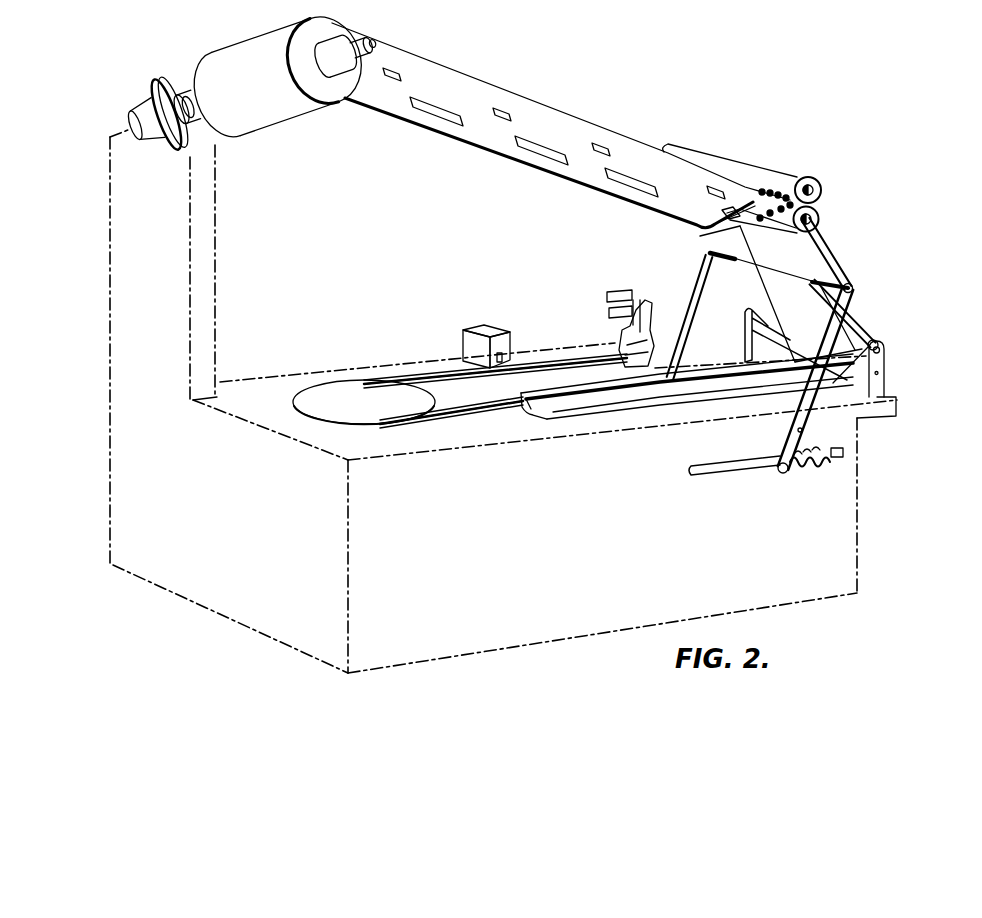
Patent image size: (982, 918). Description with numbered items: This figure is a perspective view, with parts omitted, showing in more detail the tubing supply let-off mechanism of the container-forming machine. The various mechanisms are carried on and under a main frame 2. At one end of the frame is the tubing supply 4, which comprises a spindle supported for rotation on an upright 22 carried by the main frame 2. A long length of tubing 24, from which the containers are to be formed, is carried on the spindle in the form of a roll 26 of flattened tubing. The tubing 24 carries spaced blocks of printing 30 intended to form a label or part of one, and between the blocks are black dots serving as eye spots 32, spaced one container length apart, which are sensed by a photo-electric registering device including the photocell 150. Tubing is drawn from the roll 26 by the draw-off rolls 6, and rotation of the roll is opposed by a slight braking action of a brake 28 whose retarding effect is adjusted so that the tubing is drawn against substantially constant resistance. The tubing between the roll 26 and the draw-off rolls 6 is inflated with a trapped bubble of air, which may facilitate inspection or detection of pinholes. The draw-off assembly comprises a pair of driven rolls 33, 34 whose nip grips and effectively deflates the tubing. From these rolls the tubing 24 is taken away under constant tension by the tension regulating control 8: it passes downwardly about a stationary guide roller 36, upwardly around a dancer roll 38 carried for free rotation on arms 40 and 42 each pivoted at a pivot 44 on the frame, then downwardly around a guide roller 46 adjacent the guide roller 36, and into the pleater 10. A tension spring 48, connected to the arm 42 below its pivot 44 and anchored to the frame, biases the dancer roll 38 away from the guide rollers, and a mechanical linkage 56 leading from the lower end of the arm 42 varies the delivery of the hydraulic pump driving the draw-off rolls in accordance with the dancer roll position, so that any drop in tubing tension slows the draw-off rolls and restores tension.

The main frame 2 is at (240, 598).
The tubing supply 4 is at (197, 45).
The draw-off rolls 6 is at (838, 193).
The tension regulating control 8 is at (928, 296).
The pleater 10 is at (607, 420).
The upright 22 is at (122, 357).
The tubing 24 is at (462, 72).
The roll 26 is at (222, 62).
The brake 28 is at (160, 93).
The blocks of printing 30 is at (437, 117).
The eye spots 32 is at (554, 112).
The draw-off roll 33 is at (712, 152).
The draw-off roll 34 is at (820, 222).
The stationary guide roller 36 is at (878, 343).
The dancer roll 38 is at (726, 254).
The arm 40 is at (705, 275).
The arm 42 is at (855, 283).
The pivot 44 is at (803, 417).
The guide roller 46 is at (872, 370).
The tension spring 48 is at (822, 463).
The mechanical linkage 56 is at (725, 473).
The photocell 150 is at (490, 330).